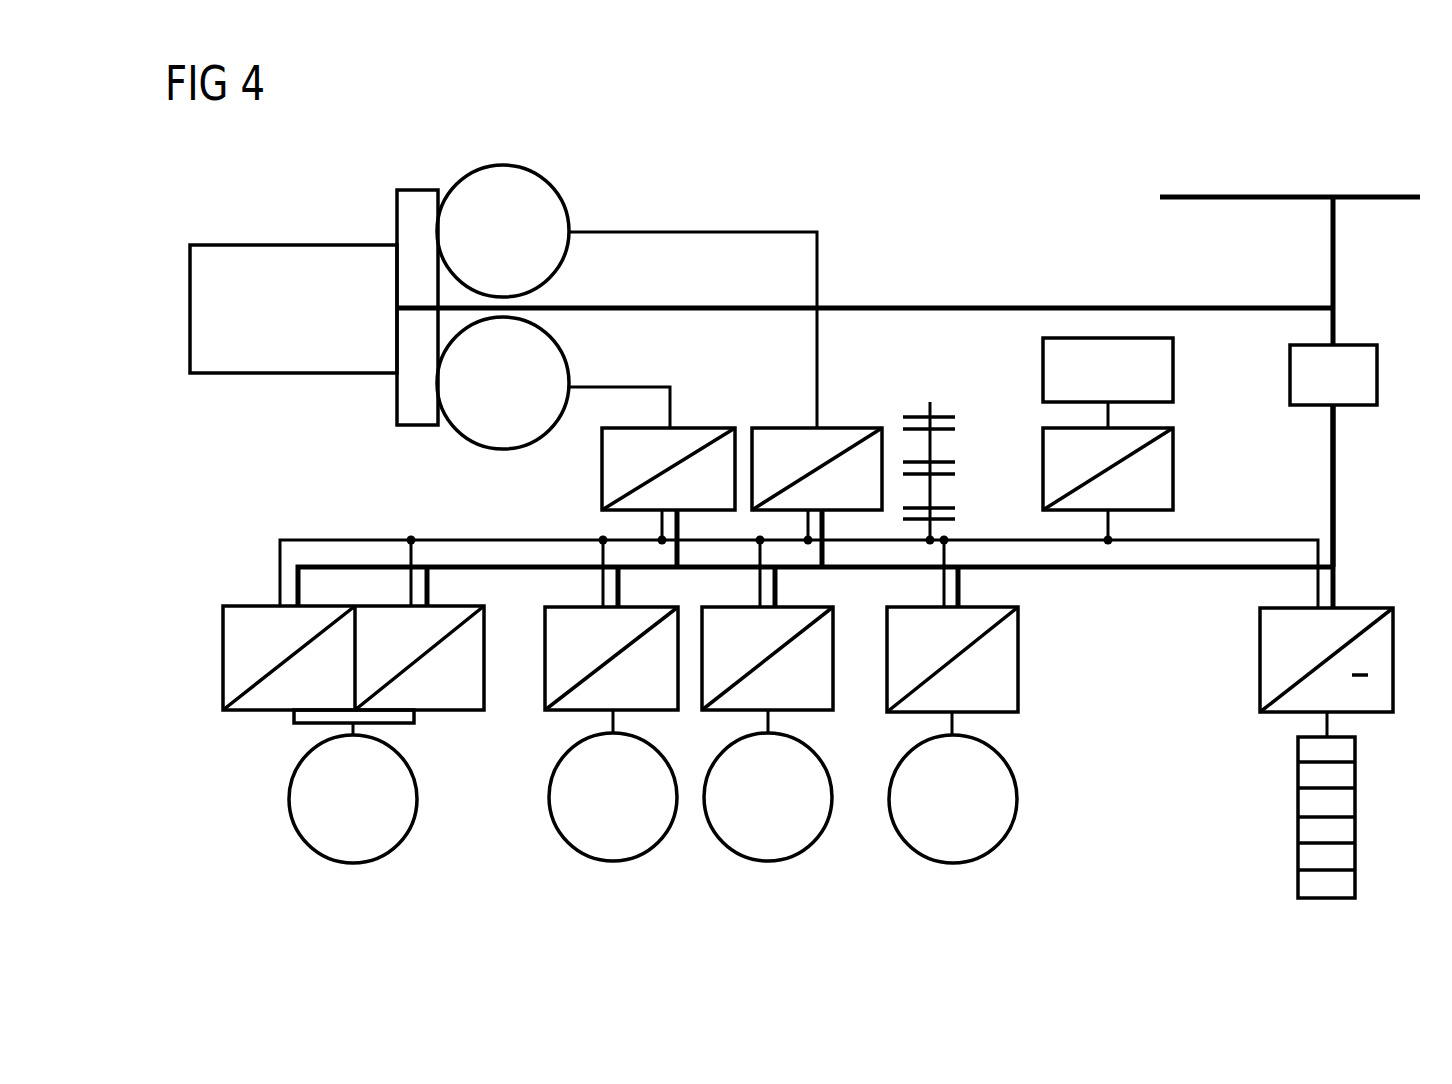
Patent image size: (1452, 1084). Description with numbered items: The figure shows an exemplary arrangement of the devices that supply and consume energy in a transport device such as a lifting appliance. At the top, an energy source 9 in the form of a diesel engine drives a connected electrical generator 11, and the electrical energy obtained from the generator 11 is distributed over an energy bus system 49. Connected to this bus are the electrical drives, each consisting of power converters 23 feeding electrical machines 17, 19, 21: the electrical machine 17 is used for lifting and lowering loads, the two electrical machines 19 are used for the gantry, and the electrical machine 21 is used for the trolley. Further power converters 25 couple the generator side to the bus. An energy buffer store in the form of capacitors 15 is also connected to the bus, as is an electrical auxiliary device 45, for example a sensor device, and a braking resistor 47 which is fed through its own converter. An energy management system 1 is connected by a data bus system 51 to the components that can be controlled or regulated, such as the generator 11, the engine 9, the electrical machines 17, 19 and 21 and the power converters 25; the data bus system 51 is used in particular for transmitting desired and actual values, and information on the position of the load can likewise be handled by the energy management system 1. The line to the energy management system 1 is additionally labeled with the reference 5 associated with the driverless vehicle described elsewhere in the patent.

The energy management system 1 is at (1380, 382).
The driverless vehicle 5 is at (1337, 492).
The energy source 9 is at (218, 244).
The electrical generator 11 is at (527, 166).
The capacitors 15 is at (957, 462).
The electrical machine 17 is at (324, 853).
The electrical machines 19 is at (672, 837).
The electrical machine 21 is at (1017, 798).
The power converters 23 is at (1177, 482).
The power converters 25 is at (767, 428).
The electrical auxiliary device 45 is at (1177, 382).
The braking resistor 47 is at (1298, 816).
The energy bus system 49 is at (731, 232).
The data bus system 51 is at (947, 308).